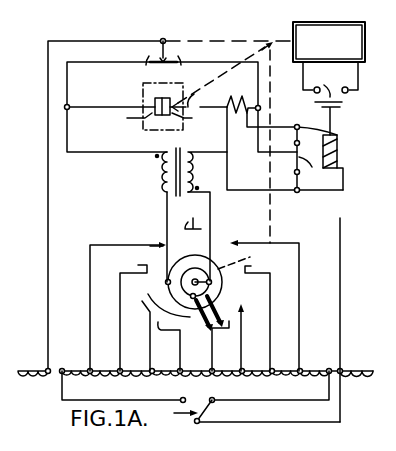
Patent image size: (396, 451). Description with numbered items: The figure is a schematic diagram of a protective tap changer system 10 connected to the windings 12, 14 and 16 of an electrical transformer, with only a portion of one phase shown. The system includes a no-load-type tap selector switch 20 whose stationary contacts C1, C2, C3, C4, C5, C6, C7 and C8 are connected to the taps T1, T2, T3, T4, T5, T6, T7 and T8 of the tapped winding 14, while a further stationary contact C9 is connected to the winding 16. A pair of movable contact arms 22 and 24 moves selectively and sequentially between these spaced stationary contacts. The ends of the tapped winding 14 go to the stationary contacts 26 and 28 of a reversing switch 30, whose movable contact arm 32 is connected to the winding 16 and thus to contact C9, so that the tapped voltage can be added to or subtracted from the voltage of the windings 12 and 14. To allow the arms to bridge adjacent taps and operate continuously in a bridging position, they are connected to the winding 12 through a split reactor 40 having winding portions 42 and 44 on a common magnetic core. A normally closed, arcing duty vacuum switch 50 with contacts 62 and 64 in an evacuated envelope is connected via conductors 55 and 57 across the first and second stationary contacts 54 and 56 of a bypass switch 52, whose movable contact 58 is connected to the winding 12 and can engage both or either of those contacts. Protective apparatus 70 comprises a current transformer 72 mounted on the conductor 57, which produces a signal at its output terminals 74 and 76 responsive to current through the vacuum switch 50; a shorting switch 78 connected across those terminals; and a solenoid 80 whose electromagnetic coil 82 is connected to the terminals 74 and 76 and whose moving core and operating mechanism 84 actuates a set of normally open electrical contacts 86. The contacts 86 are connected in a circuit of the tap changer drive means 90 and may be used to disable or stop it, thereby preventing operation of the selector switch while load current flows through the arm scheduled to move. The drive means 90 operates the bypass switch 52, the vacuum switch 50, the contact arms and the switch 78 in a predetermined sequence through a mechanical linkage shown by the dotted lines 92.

The tap changer system 10 is at (78, 228).
The winding 12 is at (37, 367).
The tapped winding 14 is at (307, 372).
The winding 16 is at (352, 372).
The tap selector switch 20 is at (118, 266).
The movable contact arm 22 is at (168, 308).
The movable contact arm 24 is at (218, 304).
The stationary contact 26 is at (182, 400).
The stationary contact 28 is at (219, 388).
The reversing switch 30 is at (268, 412).
The movable contact arm 32 is at (175, 413).
The split reactor 40 is at (140, 178).
The winding portion 42 is at (163, 180).
The winding portion 44 is at (207, 172).
The vacuum switch 50 is at (139, 88).
The bypass switch 52 is at (172, 35).
The stationary contact 54 is at (146, 71).
The conductor 55 is at (97, 104).
The stationary contact 56 is at (179, 61).
The conductor 57 is at (198, 96).
The movable contact 58 is at (157, 56).
The contact 62 is at (128, 120).
The contact 64 is at (194, 120).
The protective apparatus 70 is at (257, 175).
The current transformer 72 is at (227, 97).
The output terminal 74 is at (283, 146).
The output terminal 76 is at (297, 192).
The switch 78 is at (311, 166).
The solenoid 80 is at (371, 137).
The electromagnetic coil 82 is at (338, 150).
The operating mechanism 84 is at (320, 121).
The electrical contacts 86 is at (330, 98).
The tap changer drive means 90 is at (295, 51).
The mechanical linkage 92 is at (272, 42).
The stationary contact C1 is at (158, 240).
The stationary contact C2 is at (158, 250).
The stationary contact C3 is at (137, 336).
The stationary contact C4 is at (167, 346).
The stationary contact C5 is at (225, 346).
The stationary contact C6 is at (251, 337).
The stationary contact C7 is at (249, 312).
The stationary contact C8 is at (264, 296).
The stationary contact C9 is at (185, 215).
The tap T1 is at (72, 360).
The tap T2 is at (103, 360).
The tap T3 is at (132, 360).
The tap T4 is at (165, 360).
The tap T5 is at (195, 360).
The tap T6 is at (224, 360).
The tap T7 is at (254, 360).
The tap T8 is at (284, 360).